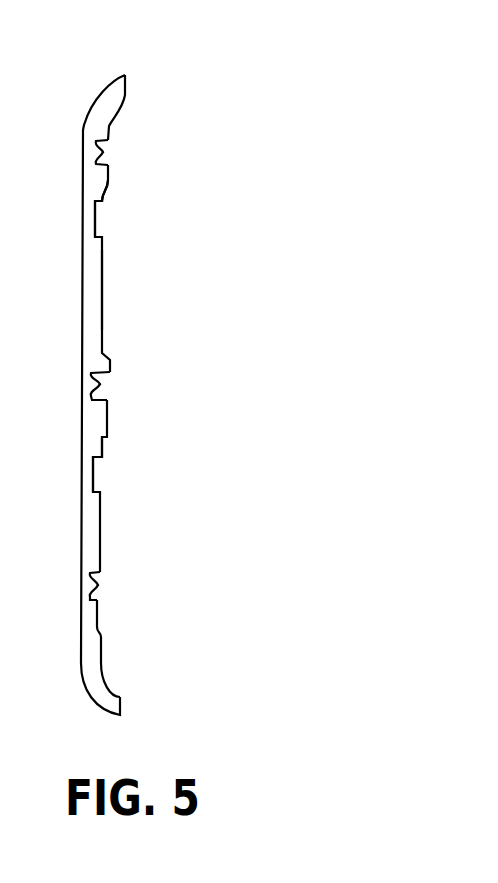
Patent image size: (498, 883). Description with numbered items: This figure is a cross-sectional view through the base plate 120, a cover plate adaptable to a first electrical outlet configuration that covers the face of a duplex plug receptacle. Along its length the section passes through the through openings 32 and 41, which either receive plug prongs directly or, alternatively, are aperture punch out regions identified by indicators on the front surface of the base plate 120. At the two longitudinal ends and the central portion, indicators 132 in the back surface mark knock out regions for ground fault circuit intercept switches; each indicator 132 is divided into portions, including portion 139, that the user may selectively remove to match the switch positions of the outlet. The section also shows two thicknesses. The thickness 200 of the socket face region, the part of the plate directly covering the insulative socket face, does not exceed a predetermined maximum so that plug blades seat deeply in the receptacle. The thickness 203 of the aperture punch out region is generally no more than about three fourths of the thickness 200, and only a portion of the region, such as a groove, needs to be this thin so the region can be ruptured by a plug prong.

The base plate 120 is at (177, 62).
The indicator 132 is at (108, 148).
The portion 139 is at (104, 155).
The through opening 32 is at (95, 203).
The thickness of the aperture punch out region 203 is at (50, 227).
The thickness of the socket face region 200 is at (48, 283).
The through opening 41 is at (102, 458).